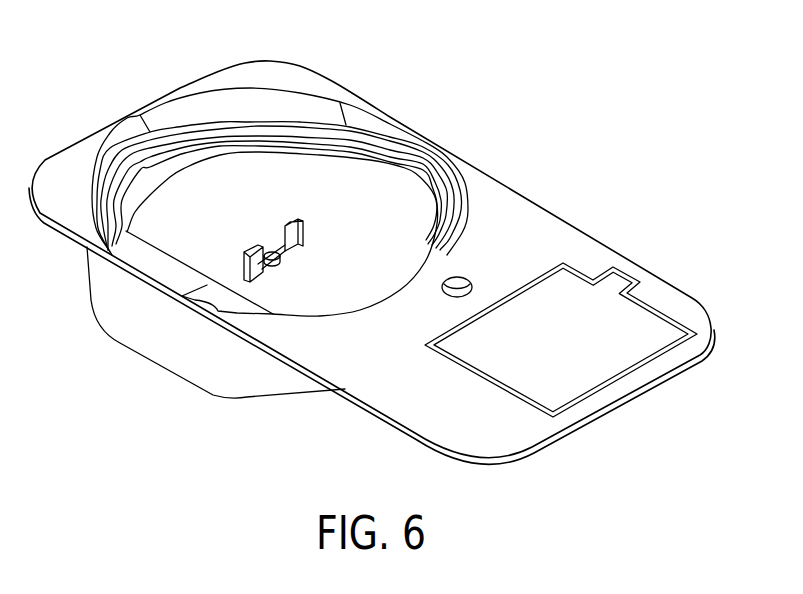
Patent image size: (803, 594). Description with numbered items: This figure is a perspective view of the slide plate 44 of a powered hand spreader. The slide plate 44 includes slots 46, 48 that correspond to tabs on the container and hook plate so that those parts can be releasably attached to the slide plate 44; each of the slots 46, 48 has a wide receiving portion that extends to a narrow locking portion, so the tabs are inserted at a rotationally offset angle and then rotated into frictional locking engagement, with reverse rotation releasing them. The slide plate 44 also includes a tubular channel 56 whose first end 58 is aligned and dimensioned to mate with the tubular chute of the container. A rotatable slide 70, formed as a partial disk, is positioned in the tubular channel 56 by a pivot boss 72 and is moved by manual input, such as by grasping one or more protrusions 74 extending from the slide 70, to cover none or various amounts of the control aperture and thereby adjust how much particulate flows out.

The slide plate 44 is at (530, 196).
The slot 46 is at (241, 133).
The slot 48 is at (360, 308).
The tubular channel 56 is at (148, 217).
The first end 58 is at (411, 153).
The rotatable slide 70 is at (358, 173).
The pivot boss 72 is at (275, 252).
The protrusion 74 is at (252, 250).